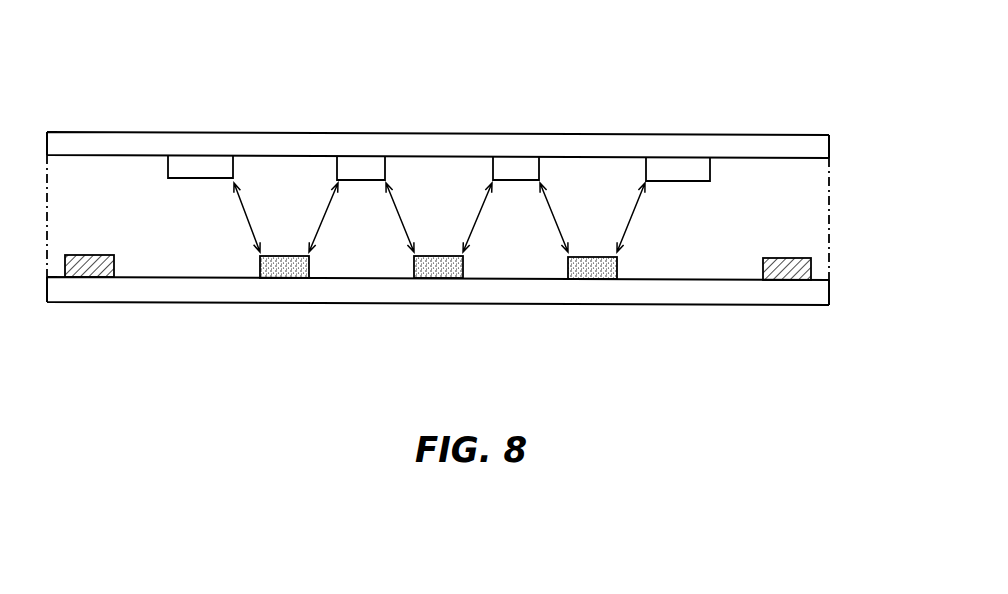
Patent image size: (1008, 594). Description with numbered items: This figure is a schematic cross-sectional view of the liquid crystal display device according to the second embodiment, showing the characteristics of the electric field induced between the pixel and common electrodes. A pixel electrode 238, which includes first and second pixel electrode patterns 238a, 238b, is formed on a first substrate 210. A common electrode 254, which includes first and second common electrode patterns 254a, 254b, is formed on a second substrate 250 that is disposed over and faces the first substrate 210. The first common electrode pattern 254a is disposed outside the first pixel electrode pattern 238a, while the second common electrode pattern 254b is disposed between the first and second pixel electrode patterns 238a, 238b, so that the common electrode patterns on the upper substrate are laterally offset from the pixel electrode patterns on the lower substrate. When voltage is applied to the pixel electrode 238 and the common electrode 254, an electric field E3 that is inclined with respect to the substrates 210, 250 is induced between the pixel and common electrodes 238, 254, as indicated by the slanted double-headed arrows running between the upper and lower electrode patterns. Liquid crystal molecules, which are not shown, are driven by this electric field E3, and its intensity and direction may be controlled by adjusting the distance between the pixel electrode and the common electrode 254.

The second substrate 250 is at (819, 147).
The first substrate 210 is at (818, 296).
The common electrode 254 is at (199, 65).
The first common electrode pattern 254a is at (197, 168).
The second common electrode pattern 254b is at (362, 167).
The pixel electrode 238 is at (285, 368).
The first pixel electrode pattern 238a is at (285, 268).
The second pixel electrode pattern 238b is at (437, 268).
The electric field E3 is at (245, 217).